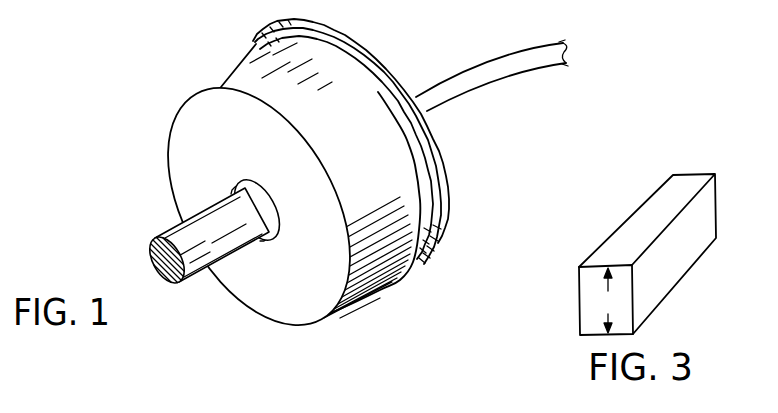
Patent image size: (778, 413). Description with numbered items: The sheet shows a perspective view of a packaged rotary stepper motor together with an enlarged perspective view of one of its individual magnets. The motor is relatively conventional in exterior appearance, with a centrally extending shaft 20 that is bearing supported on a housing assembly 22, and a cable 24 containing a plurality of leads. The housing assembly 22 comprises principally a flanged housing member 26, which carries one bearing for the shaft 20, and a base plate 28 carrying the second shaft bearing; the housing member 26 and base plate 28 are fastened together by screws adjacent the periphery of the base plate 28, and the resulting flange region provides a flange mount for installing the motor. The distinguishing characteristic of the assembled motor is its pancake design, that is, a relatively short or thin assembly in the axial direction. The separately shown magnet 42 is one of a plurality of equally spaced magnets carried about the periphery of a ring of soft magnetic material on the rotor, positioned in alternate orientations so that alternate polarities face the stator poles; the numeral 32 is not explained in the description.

In FIG. 1, the shaft 20 is at (206, 255).
In FIG. 1, the tachometer generator assembly 22 is at (332, 185).
In FIG. 1, the output cable 24 is at (495, 68).
In FIG. 1, the housing 26 is at (181, 149).
In FIG. 1, the flange ring 28 is at (447, 180).
In FIG. 1, the mounting member 32 is at (266, 408).
In FIG. 3, the magnet bar 42 is at (637, 225).